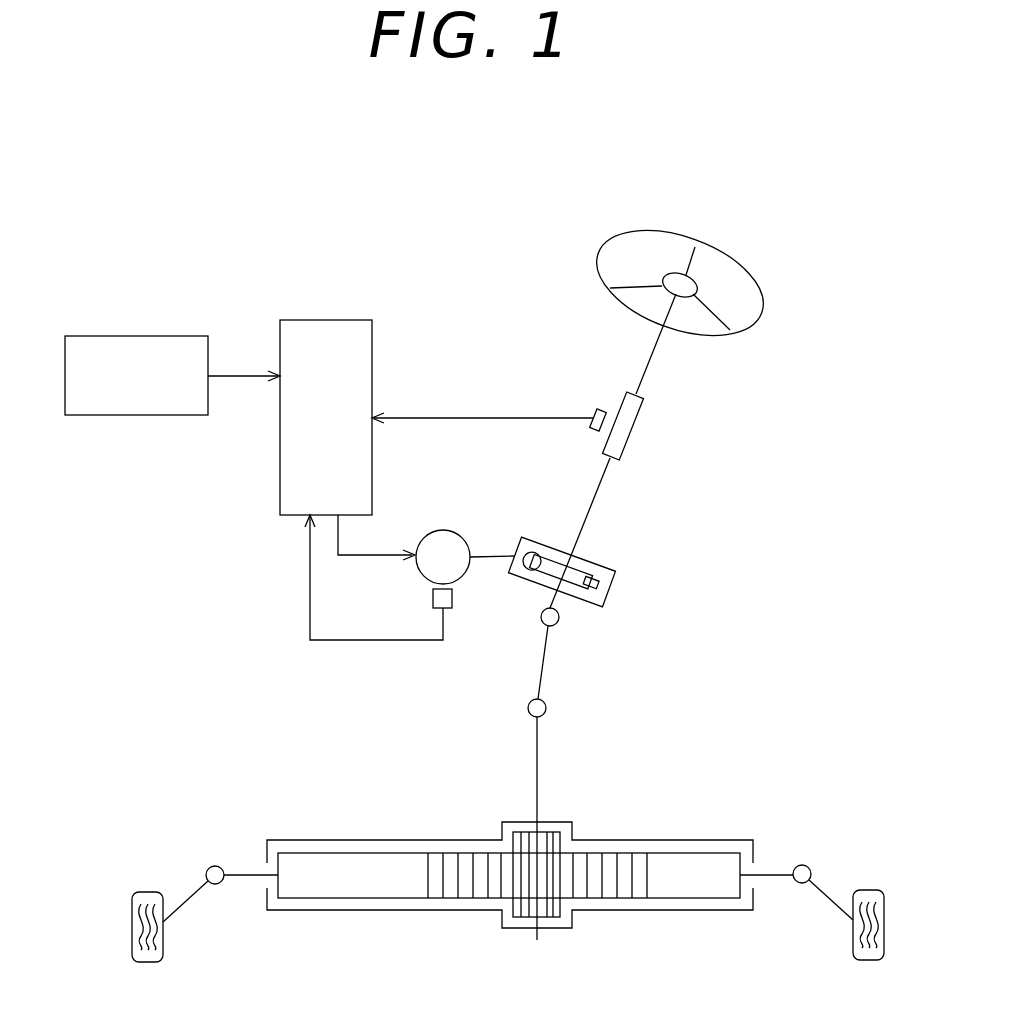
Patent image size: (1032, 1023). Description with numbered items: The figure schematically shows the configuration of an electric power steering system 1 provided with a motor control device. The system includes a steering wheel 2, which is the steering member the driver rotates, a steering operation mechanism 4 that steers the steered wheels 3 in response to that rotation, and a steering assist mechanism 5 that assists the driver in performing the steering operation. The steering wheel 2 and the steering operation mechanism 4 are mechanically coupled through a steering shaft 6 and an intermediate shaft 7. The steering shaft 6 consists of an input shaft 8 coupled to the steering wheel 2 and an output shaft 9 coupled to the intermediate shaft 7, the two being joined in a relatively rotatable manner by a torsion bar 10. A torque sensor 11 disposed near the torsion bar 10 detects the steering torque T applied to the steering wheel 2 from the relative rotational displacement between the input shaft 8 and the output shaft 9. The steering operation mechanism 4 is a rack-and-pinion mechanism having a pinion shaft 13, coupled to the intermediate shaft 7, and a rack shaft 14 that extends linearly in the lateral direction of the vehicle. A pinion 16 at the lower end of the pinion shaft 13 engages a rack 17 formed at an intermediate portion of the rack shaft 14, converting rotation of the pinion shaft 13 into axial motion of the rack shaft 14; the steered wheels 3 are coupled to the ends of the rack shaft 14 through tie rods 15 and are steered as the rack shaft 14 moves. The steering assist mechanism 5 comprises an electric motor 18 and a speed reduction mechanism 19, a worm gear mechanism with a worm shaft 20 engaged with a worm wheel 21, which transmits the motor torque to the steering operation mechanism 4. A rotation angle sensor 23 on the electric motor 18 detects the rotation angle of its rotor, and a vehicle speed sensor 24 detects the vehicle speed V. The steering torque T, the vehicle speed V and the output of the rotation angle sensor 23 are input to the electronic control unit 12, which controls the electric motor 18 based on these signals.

The electric power steering system 1 is at (772, 251).
The steering wheel 2 is at (762, 306).
The steered wheels 3 is at (147, 892).
The steering operation mechanism 4 is at (593, 851).
The steering assist mechanism 5 is at (432, 478).
The steering shaft 6 is at (661, 346).
The intermediate shaft 7 is at (544, 676).
The input shaft 8 is at (641, 383).
The output shaft 9 is at (593, 507).
The torsion bar 10 is at (624, 432).
The torque sensor 11 is at (590, 412).
The electronic control unit 12 is at (329, 320).
The pinion shaft 13 is at (540, 757).
The rack shaft 14 is at (693, 896).
The tie rods 15 is at (193, 900).
The pinion 16 is at (537, 921).
The rack 17 is at (455, 896).
The electric motor 18 is at (444, 530).
The speed reduction mechanism 19 is at (522, 538).
The worm shaft 20 is at (527, 578).
The worm wheel 21 is at (610, 598).
The rotation angle sensor 23 is at (433, 600).
The vehicle speed sensor 24 is at (137, 336).